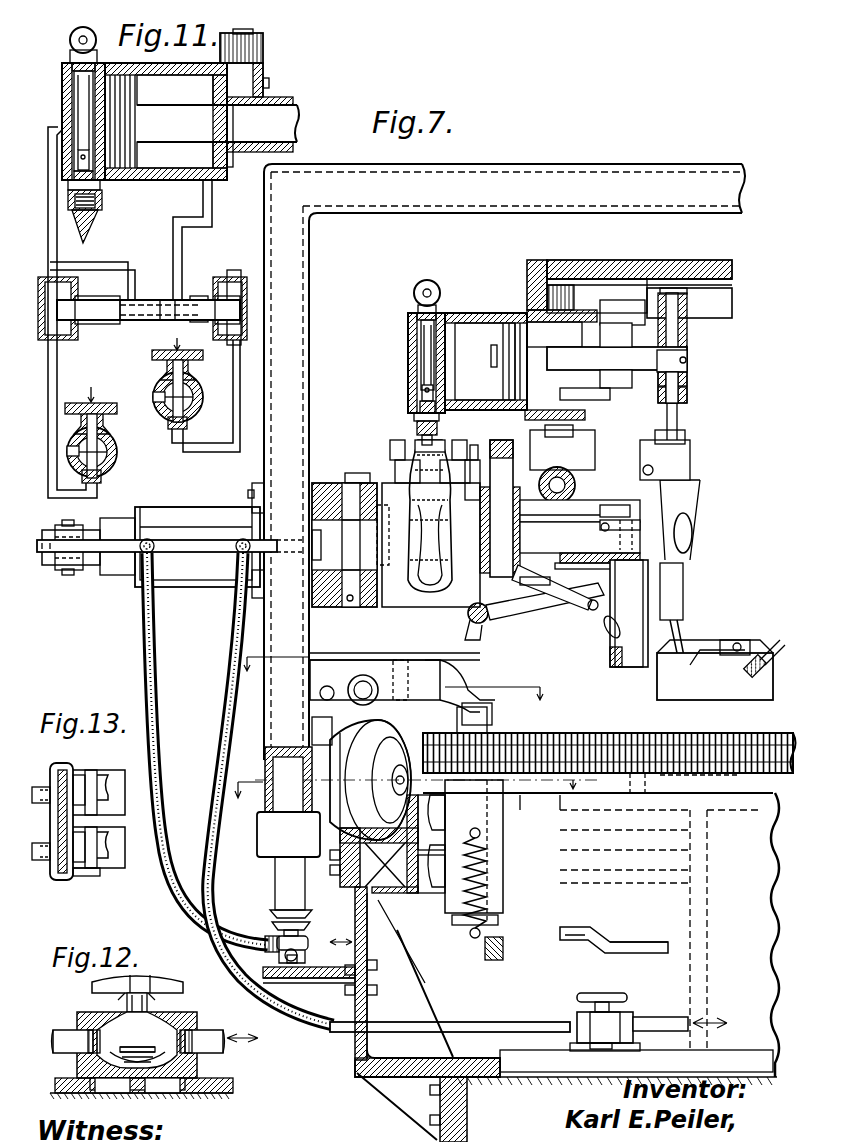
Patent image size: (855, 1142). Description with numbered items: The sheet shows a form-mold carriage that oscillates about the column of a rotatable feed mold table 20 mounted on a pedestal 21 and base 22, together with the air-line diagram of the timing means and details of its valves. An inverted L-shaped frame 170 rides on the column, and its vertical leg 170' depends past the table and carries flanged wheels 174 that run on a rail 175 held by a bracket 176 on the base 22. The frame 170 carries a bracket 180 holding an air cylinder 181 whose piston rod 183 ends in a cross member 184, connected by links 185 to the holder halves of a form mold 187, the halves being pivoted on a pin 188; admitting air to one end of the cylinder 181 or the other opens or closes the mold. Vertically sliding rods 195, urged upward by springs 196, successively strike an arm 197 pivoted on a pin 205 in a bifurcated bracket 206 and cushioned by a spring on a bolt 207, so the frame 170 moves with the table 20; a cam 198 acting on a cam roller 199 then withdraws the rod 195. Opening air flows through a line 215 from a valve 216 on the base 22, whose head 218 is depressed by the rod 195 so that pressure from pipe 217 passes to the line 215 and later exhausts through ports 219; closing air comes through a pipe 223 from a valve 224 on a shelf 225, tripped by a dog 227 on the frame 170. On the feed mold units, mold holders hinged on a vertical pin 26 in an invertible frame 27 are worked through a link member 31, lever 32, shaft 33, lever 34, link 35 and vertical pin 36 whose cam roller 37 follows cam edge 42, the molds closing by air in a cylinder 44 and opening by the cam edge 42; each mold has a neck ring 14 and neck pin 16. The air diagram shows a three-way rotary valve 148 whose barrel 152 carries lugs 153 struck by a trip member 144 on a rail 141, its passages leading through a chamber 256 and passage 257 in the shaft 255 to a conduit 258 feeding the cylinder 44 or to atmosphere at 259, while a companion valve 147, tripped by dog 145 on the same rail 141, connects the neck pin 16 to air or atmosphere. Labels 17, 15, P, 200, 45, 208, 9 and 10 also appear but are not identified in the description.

In FIG. 11, the air cylinder 17 is at (62, 128).
In FIG. 7, the air cylinder 17 is at (408, 366).
In FIG. 11, the nozzle 15 is at (100, 217).
In FIG. 7, the nozzle 15 is at (427, 433).
In FIG. 11, the cylinder 44 is at (180, 163).
In FIG. 7, the cylinder 44 is at (470, 332).
In FIG. 11, the conduit 258 is at (173, 240).
In FIG. 11, the passage 257 is at (197, 296).
In FIG. 11, the chamber 256 is at (236, 280).
In FIG. 11, the shaft 255 is at (158, 318).
In FIG. 7, the shaft 255 is at (575, 425).
In FIG. 11, the stem or barrel 152 is at (190, 385).
In FIG. 11, the passage to atmosphere 259 is at (157, 395).
In FIG. 11, the valve 148 is at (190, 418).
In FIG. 13, the valve 148 is at (102, 788).
In FIG. 11, the valve 147 is at (110, 466).
In FIG. 13, the valve 147 is at (108, 842).
In FIG. 7, the frame 170 is at (504, 446).
In FIG. 7, the vertical leg 170' is at (323, 484).
In FIG. 7, the plate P is at (527, 262).
In FIG. 7, the hatched beam 200 is at (553, 266).
In FIG. 7, the cam edge 42 is at (645, 266).
In FIG. 7, the cam roller 37 is at (690, 305).
In FIG. 7, the lever 34 is at (612, 332).
In FIG. 7, the block 45 is at (690, 355).
In FIG. 7, the link 35 is at (688, 378).
In FIG. 7, the vertical pin 36 is at (688, 393).
In FIG. 7, the vertical pin 26 is at (482, 460).
In FIG. 7, the link member 31 is at (605, 505).
In FIG. 7, the shaft 33 is at (625, 528).
In FIG. 7, the invertible frame 27 is at (568, 560).
In FIG. 7, the lever 32 is at (640, 510).
In FIG. 7, the feed mold table 20 is at (775, 732).
In FIG. 7, the pin 188 is at (343, 477).
In FIG. 7, the form mold 187 is at (390, 497).
In FIG. 7, the neck pin 16 is at (417, 453).
In FIG. 7, the neck ring 14 is at (415, 444).
In FIG. 7, the pin 205 is at (400, 660).
In FIG. 7, the bifurcated bracket 206 is at (318, 668).
In FIG. 7, the nut 208 is at (345, 682).
In FIG. 7, the bolt 207 is at (370, 678).
In FIG. 7, the arm 197 is at (425, 676).
In FIG. 7, the vertically sliding rod 195 is at (470, 945).
In FIG. 7, the section line 10 is at (390, 678).
In FIG. 7, the section line 9 is at (416, 797).
In FIG. 7, the bracket 180 is at (257, 483).
In FIG. 7, the air cylinder 181 is at (166, 512).
In FIG. 7, the cross member 184 is at (80, 535).
In FIG. 7, the piston rod 183 is at (95, 565).
In FIG. 7, the link 185 is at (195, 565).
In FIG. 7, the pipe 223 is at (162, 715).
In FIG. 7, the line 215 is at (222, 683).
In FIG. 12, the line 215 is at (60, 1035).
In FIG. 7, the shelf 225 is at (305, 1003).
In FIG. 7, the flanged wheel 174 is at (358, 748).
In FIG. 7, the rail 175 is at (288, 828).
In FIG. 7, the dog 227 is at (272, 912).
In FIG. 7, the valve 224 is at (336, 952).
In FIG. 7, the bracket 176 is at (367, 958).
In FIG. 7, the base 22 is at (470, 1085).
In FIG. 7, the pedestal 21 is at (703, 895).
In FIG. 7, the lug 153 is at (438, 806).
In FIG. 13, the lug 153 is at (90, 775).
In FIG. 7, the spring 196 is at (465, 908).
In FIG. 7, the cam roller 199 is at (500, 960).
In FIG. 7, the cam 198 is at (600, 938).
In FIG. 7, the valve 216 is at (625, 1012).
In FIG. 12, the valve 216 is at (175, 1022).
In FIG. 7, the pipe 217 is at (675, 1017).
In FIG. 12, the pipe 217 is at (205, 1036).
In FIG. 13, the rail 141 is at (62, 880).
In FIG. 13, the trip member 144 is at (55, 775).
In FIG. 13, the trip member 145 is at (75, 872).
In FIG. 12, the head 218 is at (155, 985).
In FIG. 12, the port 219 is at (118, 1000).